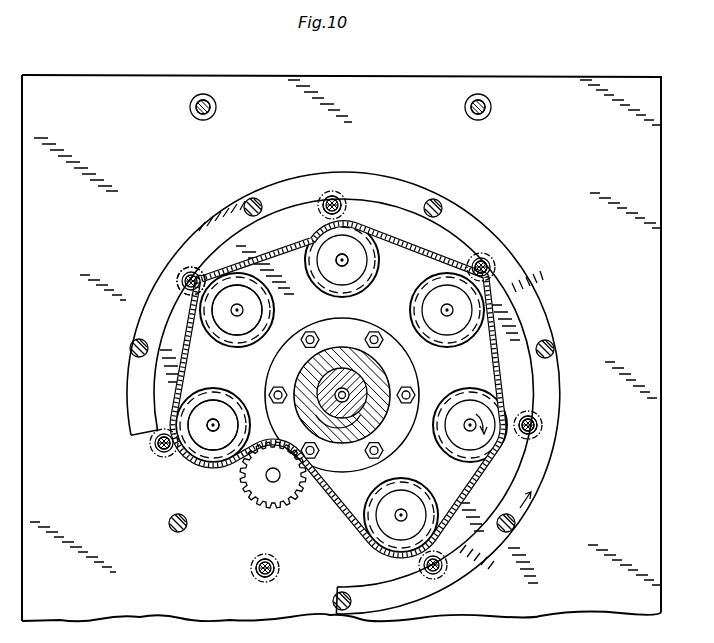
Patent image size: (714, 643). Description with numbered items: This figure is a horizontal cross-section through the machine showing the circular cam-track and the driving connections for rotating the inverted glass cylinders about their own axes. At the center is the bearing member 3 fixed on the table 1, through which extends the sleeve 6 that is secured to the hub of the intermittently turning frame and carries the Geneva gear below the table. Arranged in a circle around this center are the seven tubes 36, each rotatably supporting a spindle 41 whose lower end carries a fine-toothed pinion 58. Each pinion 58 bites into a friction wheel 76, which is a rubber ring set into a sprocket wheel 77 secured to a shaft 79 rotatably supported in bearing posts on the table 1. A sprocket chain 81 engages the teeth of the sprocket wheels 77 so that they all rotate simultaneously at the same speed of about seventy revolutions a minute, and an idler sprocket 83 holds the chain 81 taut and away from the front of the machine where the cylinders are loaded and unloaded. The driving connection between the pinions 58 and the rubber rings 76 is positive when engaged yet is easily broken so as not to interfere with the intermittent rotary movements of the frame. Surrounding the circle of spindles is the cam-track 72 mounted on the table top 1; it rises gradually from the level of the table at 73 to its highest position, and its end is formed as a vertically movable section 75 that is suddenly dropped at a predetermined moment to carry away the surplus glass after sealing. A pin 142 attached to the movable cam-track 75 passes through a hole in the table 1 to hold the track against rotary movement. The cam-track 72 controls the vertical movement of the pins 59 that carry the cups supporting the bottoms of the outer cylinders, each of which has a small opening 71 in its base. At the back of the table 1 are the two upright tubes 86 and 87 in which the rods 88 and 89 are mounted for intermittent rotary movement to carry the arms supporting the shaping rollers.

The table 1 is at (642, 280).
The bearing member 3 is at (385, 386).
The sleeve 6 is at (345, 440).
The tube 36 is at (346, 200).
The spindle 41 is at (484, 262).
The pinion 58 is at (341, 197).
The pin 59 is at (254, 197).
The opening 71 is at (341, 627).
The cam-track 72 is at (530, 480).
The level of the table 73 is at (326, 608).
The vertically movable section 75 is at (131, 388).
The friction wheel 76 is at (360, 288).
The sprocket wheel 77 is at (245, 299).
The shaft 79 is at (342, 266).
The sprocket chain 81 is at (430, 248).
The idler sprocket 83 is at (262, 493).
The upright tube 86 is at (492, 107).
The upright tube 87 is at (217, 107).
The rod 88 is at (465, 107).
The rod 89 is at (190, 107).
The pin 142 is at (165, 293).